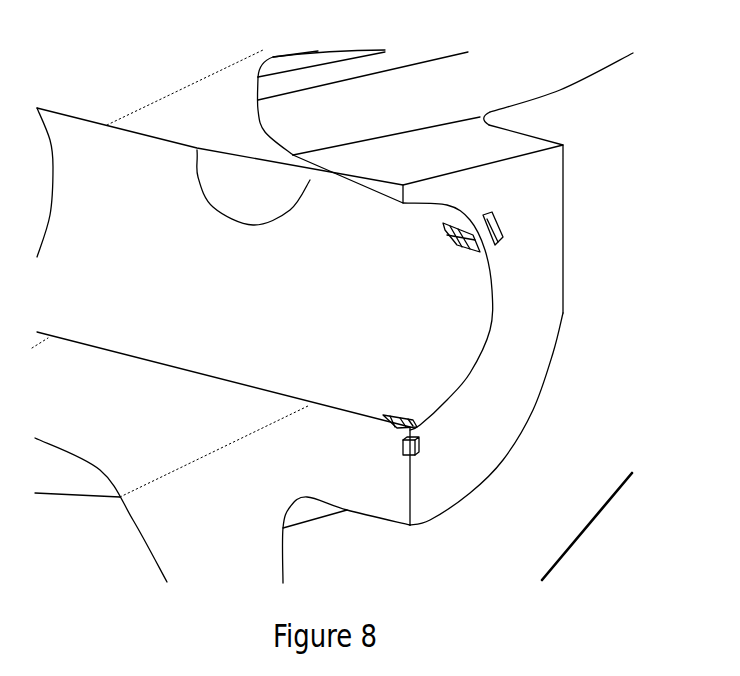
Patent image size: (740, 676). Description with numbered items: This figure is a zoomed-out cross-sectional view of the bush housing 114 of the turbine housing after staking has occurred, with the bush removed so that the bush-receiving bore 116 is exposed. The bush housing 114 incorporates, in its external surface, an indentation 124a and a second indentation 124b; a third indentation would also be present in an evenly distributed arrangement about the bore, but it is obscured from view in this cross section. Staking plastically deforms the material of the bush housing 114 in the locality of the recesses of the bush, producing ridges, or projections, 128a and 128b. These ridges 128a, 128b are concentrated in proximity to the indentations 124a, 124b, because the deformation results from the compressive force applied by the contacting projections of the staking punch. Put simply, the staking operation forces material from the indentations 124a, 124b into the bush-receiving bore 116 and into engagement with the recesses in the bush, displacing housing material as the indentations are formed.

The bush housing 114 is at (530, 313).
The bush-receiving bore 116 is at (197, 150).
The indentation 124a is at (420, 447).
The second indentation 124b is at (500, 221).
The ridge 128a is at (407, 412).
The ridge 128b is at (467, 258).